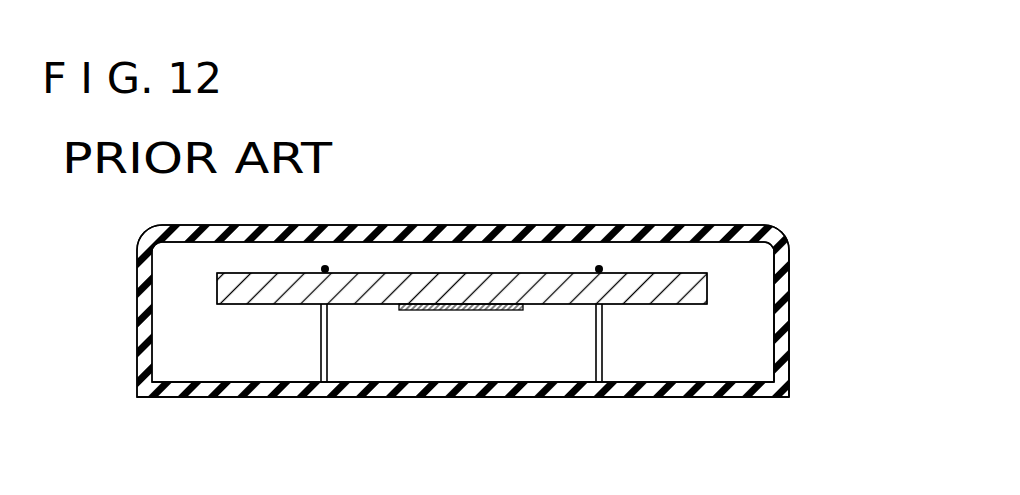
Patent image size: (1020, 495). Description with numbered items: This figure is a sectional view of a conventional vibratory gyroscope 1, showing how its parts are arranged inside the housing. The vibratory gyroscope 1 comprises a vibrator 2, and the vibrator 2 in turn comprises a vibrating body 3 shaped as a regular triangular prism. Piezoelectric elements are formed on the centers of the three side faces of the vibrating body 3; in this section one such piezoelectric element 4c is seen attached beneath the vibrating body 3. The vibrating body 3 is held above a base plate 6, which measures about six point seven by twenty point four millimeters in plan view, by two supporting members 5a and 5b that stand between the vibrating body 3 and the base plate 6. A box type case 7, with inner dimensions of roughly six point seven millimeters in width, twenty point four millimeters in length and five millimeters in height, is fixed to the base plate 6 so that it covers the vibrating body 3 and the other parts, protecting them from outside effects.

The vibratory gyroscope 1 is at (651, 181).
The vibrator 2 is at (237, 318).
The vibrating body 3 is at (383, 304).
The piezoelectric element 4c is at (485, 310).
The supporting member 5a is at (321, 355).
The supporting member 5b is at (603, 355).
The base plate 6 is at (484, 390).
The case 7 is at (782, 328).